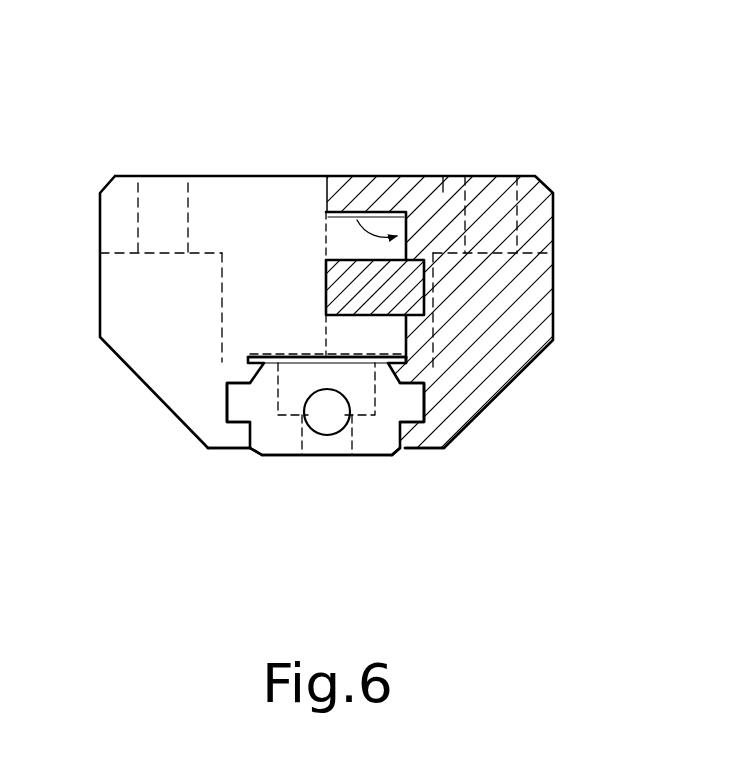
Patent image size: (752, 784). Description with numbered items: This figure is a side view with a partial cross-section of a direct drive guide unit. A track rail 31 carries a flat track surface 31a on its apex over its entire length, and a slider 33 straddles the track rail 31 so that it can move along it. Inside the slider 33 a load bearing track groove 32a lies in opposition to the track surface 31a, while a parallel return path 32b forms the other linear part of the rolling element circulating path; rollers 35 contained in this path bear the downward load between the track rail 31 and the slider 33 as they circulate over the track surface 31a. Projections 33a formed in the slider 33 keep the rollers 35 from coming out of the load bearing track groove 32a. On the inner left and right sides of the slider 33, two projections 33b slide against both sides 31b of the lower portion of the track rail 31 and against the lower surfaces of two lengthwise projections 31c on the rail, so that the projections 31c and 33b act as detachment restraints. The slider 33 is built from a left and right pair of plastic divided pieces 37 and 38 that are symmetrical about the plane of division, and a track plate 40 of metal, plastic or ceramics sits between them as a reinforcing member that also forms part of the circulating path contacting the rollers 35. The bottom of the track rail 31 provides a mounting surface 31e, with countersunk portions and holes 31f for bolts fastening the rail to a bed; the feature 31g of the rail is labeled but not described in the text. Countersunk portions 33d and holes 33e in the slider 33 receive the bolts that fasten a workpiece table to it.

The track rail 31 is at (362, 458).
The track surface 31a is at (297, 346).
The sides of lower portion of track rail 31b is at (250, 440).
The projections 31c is at (248, 405).
The mounting surface 31e is at (276, 457).
The holes 31f is at (322, 433).
The slot of slider 31g is at (352, 440).
The load bearing track groove 32a is at (365, 320).
The return path 32b is at (365, 250).
The slider 33 is at (558, 176).
The projections 33a is at (407, 369).
The projections 33b is at (232, 437).
The countersunk portions 33d is at (100, 275).
The holes 33e is at (138, 202).
The roller 35 is at (397, 331).
The divided piece 37 is at (208, 192).
The divided piece 38 is at (445, 176).
The track plate 40 is at (325, 277).